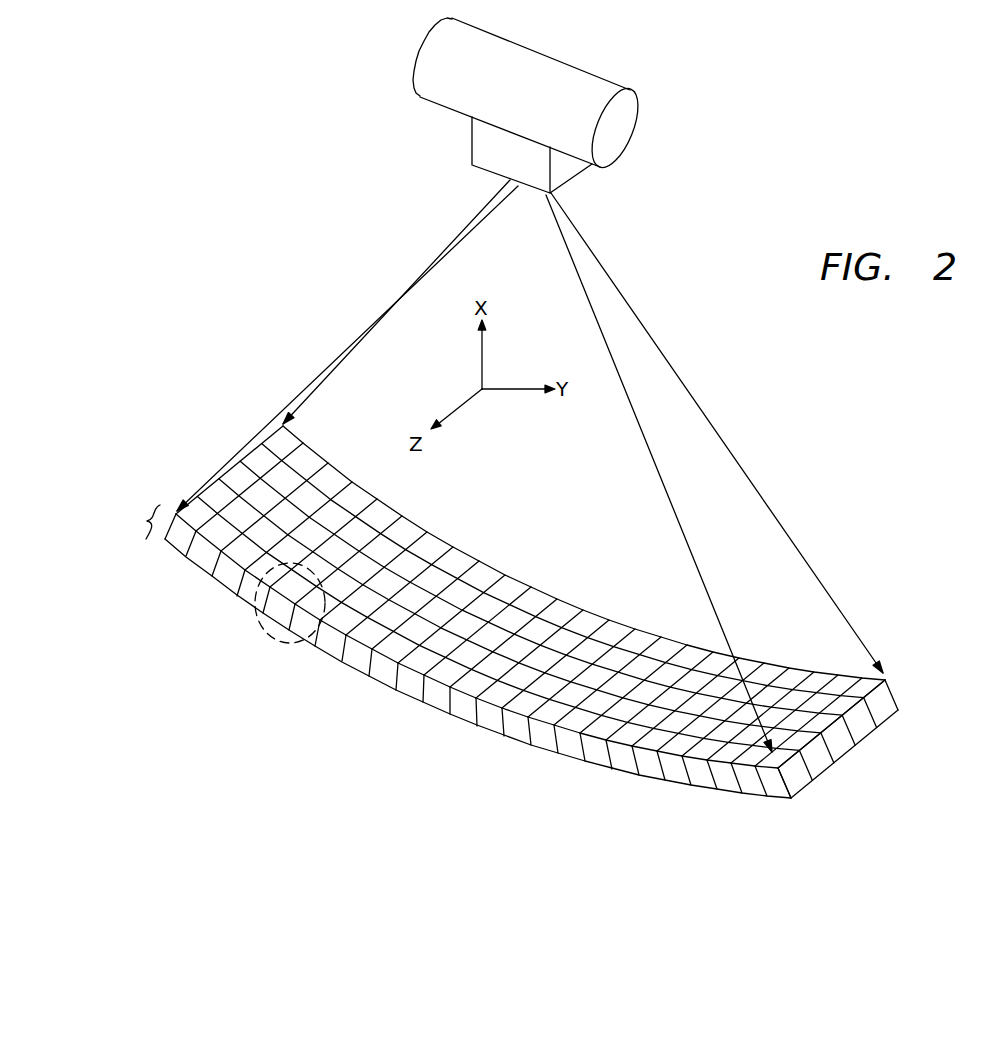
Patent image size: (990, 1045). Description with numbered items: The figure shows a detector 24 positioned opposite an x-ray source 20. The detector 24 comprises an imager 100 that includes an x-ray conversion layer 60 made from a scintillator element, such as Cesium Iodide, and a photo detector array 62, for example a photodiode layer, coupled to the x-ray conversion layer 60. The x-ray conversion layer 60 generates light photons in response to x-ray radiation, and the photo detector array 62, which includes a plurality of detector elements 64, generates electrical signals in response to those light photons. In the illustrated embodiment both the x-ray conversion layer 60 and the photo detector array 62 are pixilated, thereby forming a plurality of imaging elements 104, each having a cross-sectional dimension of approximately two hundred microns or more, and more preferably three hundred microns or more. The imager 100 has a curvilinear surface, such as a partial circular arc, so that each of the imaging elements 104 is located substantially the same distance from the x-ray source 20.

The x-ray source 20 is at (580, 68).
The detector 24 is at (500, 558).
The x-ray conversion layer 60 is at (895, 688).
The photo detector array 62 is at (893, 708).
The detector elements 64 is at (725, 787).
The imager 100 is at (146, 520).
The imaging elements 104 is at (263, 636).